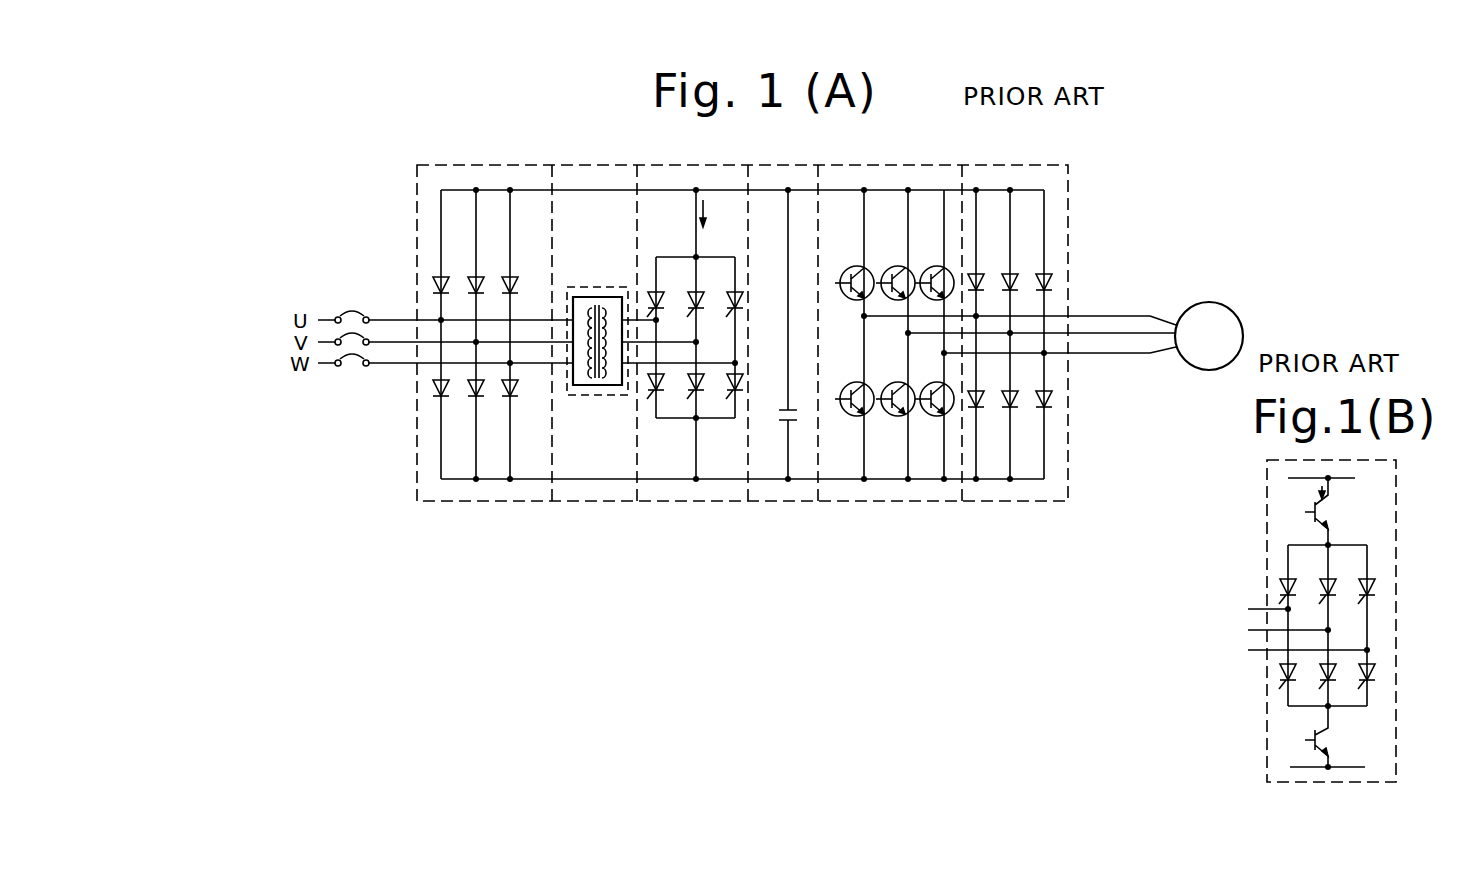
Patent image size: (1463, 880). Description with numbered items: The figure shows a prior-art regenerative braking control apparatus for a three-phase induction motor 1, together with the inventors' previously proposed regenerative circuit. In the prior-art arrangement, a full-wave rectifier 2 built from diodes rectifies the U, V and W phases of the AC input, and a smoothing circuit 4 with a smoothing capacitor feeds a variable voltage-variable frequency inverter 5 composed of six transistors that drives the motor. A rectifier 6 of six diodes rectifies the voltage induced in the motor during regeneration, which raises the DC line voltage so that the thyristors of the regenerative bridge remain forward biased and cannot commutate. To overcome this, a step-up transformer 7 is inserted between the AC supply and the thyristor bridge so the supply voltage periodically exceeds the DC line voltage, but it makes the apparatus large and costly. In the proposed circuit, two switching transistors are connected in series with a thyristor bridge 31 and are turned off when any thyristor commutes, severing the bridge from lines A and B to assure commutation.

The three-phase induction motor 1 is at (1214, 304).
The full-wave rectifier 2 is at (441, 166).
The smoothing circuit 4 is at (795, 166).
The variable voltage-variable frequency inverter 5 is at (875, 166).
The rectifier 6 is at (995, 166).
The step-up transformer 7 is at (585, 288).
The thyristor bridge 31 is at (1368, 567).